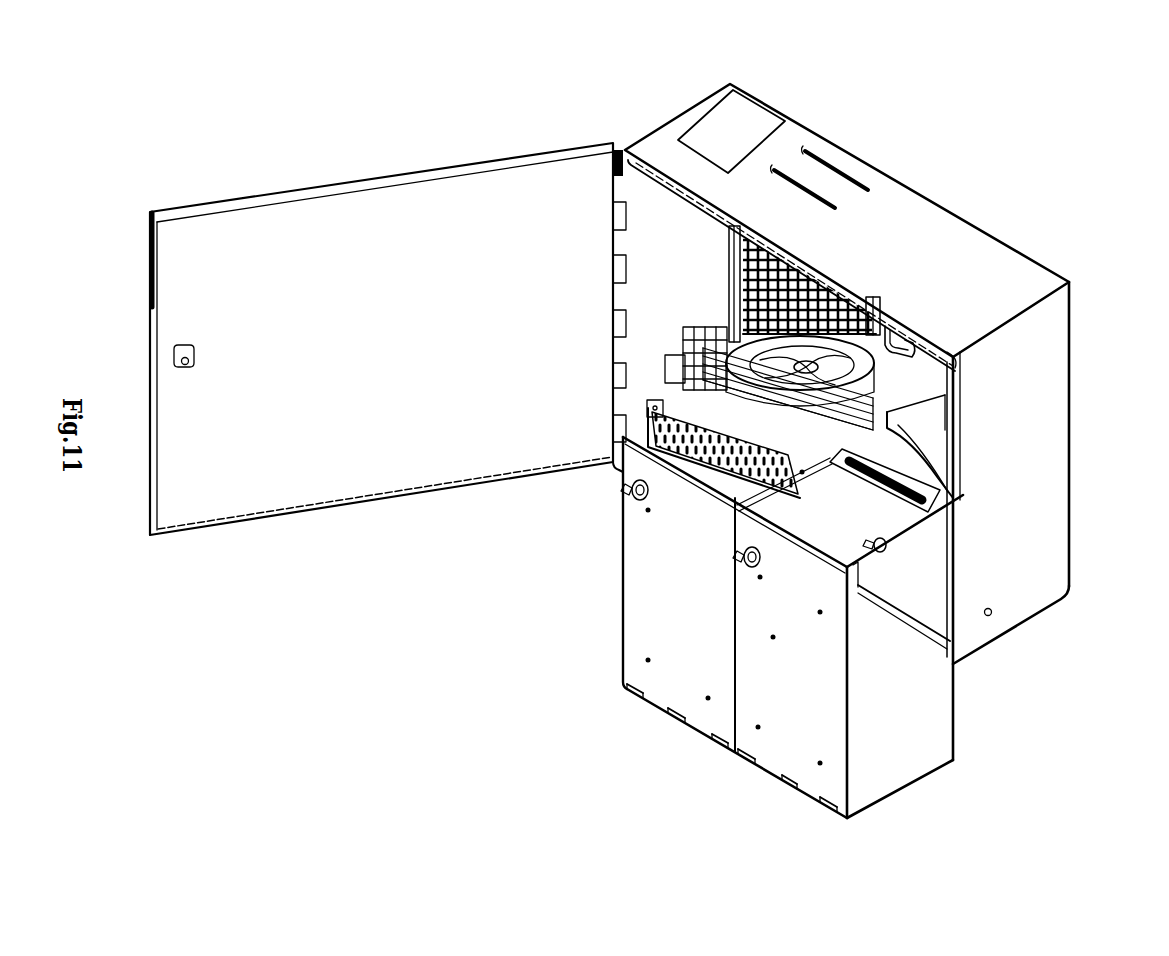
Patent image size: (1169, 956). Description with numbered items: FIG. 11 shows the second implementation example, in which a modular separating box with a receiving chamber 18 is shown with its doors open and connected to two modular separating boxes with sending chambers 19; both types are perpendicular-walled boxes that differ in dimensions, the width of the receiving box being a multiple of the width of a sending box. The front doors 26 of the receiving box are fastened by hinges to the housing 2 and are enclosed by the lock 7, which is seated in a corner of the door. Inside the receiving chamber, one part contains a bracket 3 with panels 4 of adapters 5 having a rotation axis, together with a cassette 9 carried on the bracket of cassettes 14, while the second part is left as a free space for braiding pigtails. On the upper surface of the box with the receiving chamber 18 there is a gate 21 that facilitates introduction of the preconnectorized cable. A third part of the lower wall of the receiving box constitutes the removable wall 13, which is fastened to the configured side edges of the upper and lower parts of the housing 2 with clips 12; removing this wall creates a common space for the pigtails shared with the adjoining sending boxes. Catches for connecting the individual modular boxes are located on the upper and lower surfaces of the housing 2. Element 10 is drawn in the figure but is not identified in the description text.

The housing 2 is at (630, 142).
The bracket 3 is at (728, 265).
The panel of adapters 4 is at (765, 215).
The adapter 5 is at (873, 295).
The lock 7 is at (190, 340).
The cassette 9 is at (877, 307).
The curved bracket 10 is at (945, 442).
The clip 12 is at (848, 590).
The removable wall 13 is at (915, 615).
The bracket of cassettes 14 is at (935, 320).
The modular separating box with a receiving chamber 18 is at (960, 340).
The modular separating box with a sending chamber 19 is at (618, 608).
The gate 21 is at (737, 140).
The front doors 26 is at (315, 378).